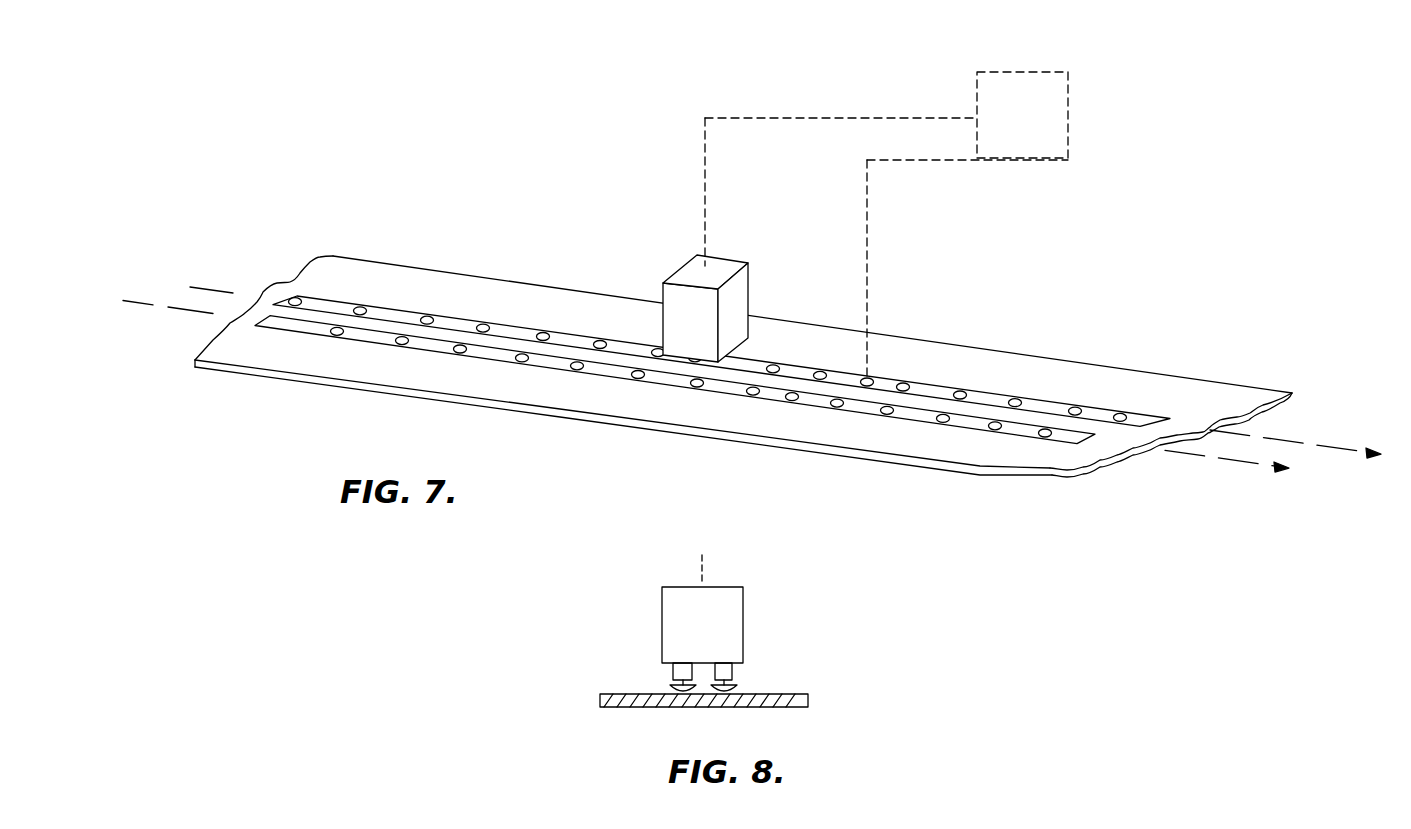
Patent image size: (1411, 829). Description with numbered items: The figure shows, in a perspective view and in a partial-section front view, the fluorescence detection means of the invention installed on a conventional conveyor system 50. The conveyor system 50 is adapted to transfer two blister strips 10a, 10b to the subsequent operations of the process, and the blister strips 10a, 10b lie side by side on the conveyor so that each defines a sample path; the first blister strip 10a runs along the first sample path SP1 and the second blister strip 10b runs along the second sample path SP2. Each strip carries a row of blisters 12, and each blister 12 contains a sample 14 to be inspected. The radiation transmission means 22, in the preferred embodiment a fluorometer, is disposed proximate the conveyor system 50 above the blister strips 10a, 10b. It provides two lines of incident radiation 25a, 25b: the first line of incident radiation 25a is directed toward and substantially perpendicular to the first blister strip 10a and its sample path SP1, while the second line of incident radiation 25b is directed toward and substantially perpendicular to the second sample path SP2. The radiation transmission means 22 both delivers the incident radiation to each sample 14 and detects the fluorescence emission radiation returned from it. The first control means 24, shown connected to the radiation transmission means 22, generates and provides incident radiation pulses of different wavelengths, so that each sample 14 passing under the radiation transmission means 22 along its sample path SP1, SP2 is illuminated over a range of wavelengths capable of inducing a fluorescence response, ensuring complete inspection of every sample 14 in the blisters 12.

In FIG. 7, the conveyor system 50 is at (443, 272).
In FIG. 8, the conveyor system 50 is at (603, 695).
In FIG. 7, the first blister strip 10a is at (1050, 402).
In FIG. 7, the second blister strip 10b is at (970, 428).
In FIG. 7, the blisters 12 is at (960, 387).
In FIG. 8, the blisters 12 is at (672, 690).
In FIG. 7, the sample 14 is at (870, 335).
In FIG. 7, the radiation transmission means 22 is at (748, 290).
In FIG. 8, the radiation transmission means 22 is at (745, 608).
In FIG. 7, the first control means 24 is at (1073, 143).
In FIG. 8, the first line of incident radiation 25a is at (667, 684).
In FIG. 8, the second line of incident radiation 25b is at (733, 684).
In FIG. 7, the first sample path SP1 is at (1333, 448).
In FIG. 7, the second sample path SP2 is at (1243, 463).